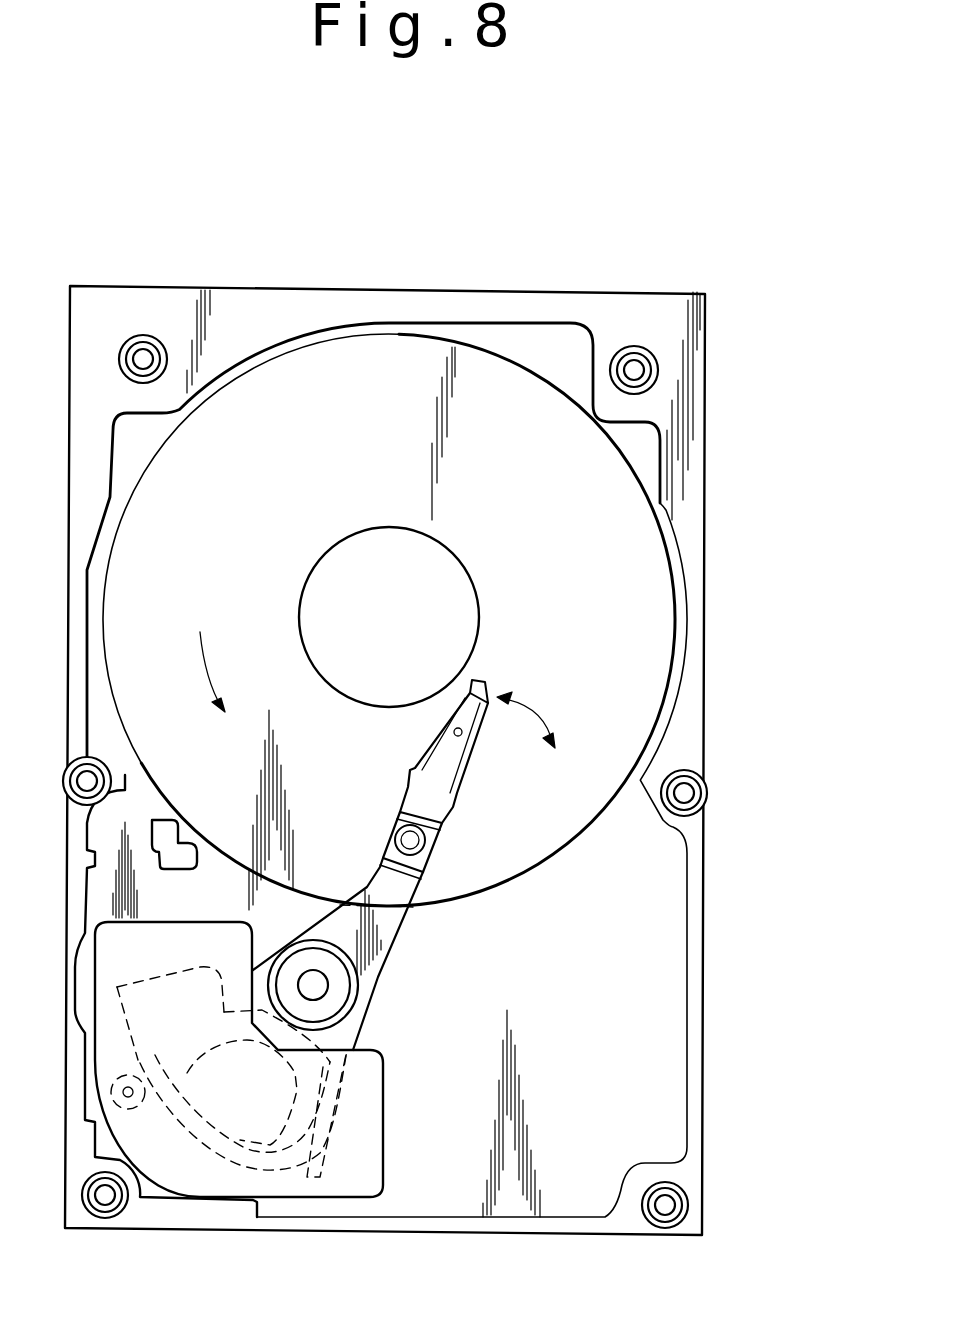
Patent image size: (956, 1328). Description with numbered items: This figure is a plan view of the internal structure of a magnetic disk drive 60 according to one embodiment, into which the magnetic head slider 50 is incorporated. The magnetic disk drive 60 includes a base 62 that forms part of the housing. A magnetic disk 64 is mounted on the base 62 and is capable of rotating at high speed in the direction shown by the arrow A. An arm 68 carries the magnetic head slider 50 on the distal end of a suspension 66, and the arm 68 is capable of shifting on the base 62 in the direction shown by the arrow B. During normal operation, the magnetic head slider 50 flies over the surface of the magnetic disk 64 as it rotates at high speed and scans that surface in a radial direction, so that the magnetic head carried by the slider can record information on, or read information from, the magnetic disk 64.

The magnetic disk drive 60 is at (410, 267).
The base 62 is at (693, 1088).
The magnetic disk 64 is at (607, 590).
The magnetic head slider 50 is at (480, 680).
The suspension 66 is at (432, 807).
The arm 68 is at (383, 928).